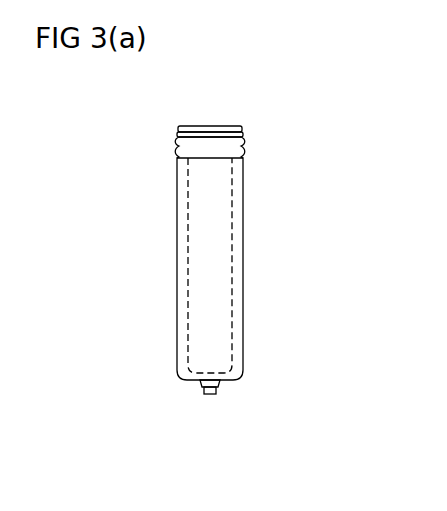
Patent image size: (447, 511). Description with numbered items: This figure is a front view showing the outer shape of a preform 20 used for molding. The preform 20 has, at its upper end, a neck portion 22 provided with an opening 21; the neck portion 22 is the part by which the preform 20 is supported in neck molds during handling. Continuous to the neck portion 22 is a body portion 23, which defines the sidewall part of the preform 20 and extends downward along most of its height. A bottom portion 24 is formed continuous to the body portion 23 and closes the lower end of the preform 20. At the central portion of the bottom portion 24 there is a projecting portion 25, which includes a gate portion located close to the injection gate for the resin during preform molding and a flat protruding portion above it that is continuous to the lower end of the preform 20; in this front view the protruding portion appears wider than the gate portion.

The preform 20 is at (263, 266).
The opening 21 is at (214, 125).
The neck portion 22 is at (176, 146).
The body portion 23 is at (176, 270).
The bottom portion 24 is at (199, 383).
The projecting portion 25 is at (221, 385).